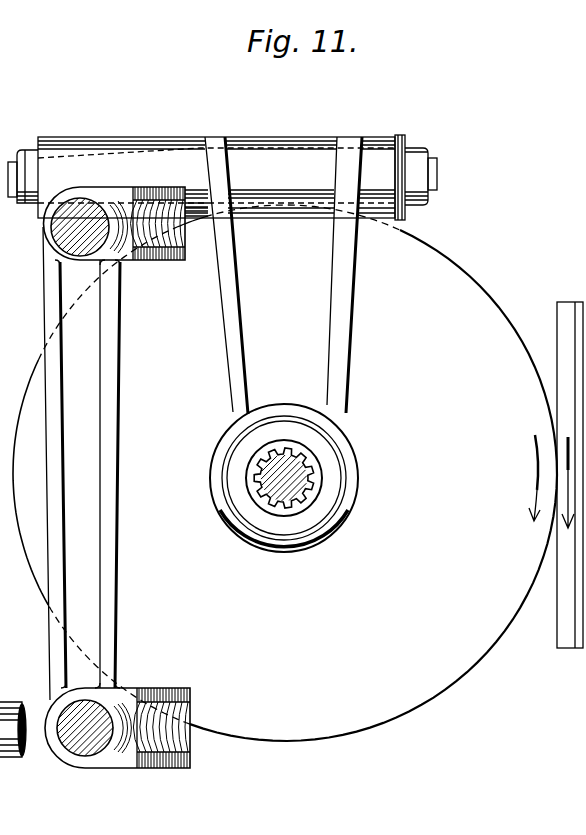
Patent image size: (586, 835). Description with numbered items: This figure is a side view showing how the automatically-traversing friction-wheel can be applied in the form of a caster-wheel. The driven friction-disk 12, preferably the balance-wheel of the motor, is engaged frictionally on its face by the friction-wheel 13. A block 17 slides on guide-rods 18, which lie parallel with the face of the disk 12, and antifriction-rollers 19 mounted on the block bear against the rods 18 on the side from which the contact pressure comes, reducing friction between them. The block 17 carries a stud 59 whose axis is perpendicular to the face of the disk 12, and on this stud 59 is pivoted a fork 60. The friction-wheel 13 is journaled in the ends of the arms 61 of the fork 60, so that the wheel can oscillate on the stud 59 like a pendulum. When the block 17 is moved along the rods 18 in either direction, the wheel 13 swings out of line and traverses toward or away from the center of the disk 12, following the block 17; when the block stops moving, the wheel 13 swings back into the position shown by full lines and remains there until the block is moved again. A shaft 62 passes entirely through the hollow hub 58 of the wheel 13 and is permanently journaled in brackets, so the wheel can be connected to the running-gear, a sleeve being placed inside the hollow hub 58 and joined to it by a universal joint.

The driven friction-disk 12 is at (570, 630).
The friction-wheel 13 is at (285, 473).
The block 17 is at (116, 194).
The guide-rods 18 is at (50, 760).
The antifriction-rollers 19 is at (157, 258).
The hub 58 is at (233, 497).
The stud 59 is at (437, 165).
The fork 60 is at (283, 275).
The arms 61 is at (275, 543).
The shaft 62 is at (312, 500).